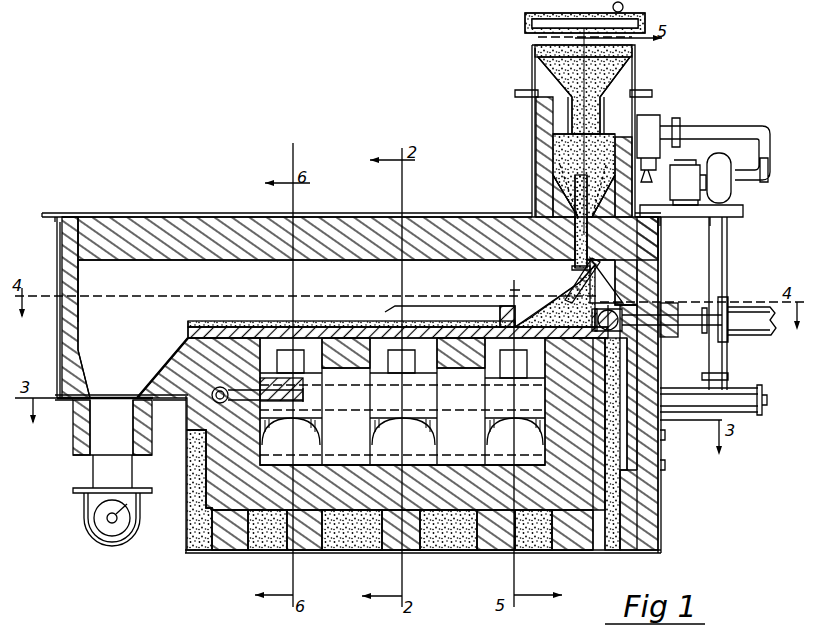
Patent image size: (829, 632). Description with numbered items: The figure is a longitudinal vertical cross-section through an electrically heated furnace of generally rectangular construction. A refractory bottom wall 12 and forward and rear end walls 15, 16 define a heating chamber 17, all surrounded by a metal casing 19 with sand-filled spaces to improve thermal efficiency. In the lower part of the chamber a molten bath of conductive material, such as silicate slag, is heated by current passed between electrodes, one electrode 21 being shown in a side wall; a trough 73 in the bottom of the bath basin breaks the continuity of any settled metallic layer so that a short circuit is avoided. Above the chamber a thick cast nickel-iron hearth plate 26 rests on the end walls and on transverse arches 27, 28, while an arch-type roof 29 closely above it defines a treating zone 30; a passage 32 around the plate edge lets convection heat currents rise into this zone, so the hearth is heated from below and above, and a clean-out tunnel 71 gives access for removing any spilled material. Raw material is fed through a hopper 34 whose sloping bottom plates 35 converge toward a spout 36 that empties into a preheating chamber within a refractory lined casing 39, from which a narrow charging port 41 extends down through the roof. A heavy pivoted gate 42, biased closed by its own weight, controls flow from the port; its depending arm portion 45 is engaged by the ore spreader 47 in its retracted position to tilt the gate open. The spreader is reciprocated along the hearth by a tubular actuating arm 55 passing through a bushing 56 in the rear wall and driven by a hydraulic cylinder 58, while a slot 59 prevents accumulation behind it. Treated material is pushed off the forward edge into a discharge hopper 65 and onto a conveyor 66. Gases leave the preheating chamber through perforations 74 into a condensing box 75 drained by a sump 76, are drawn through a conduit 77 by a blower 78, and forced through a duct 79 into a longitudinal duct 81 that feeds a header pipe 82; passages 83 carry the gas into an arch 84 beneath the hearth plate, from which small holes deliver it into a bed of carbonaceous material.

The bottom wall 12 is at (362, 505).
The end wall 15 is at (62, 266).
The end wall 16 is at (572, 470).
The heating chamber 17 is at (466, 446).
The metal casing 19 is at (120, 214).
The electrode 21 is at (375, 440).
The hearth plate 26 is at (368, 322).
The arch 27 is at (353, 369).
The arch 28 is at (466, 374).
The roof 29 is at (350, 228).
The treating zone 30 is at (370, 290).
The passage 32 is at (582, 191).
The hopper 34 is at (633, 51).
The bottom plate 35 is at (633, 72).
The spout 36 is at (534, 125).
The refractory lined casing 39 is at (540, 198).
The charging port 41 is at (568, 262).
The pivoted gate 42 is at (601, 276).
The depending arm portion 45 is at (609, 291).
The ore spreader 47 is at (462, 307).
The tubular actuating arm 55 is at (672, 330).
The bushing 56 is at (668, 303).
The hydraulic cylinder 58 is at (752, 308).
The slot 59 is at (655, 368).
The discharge hopper 65 is at (138, 378).
The conveyor 66 is at (108, 536).
The clean-out tunnel 71 is at (412, 358).
The trough 73 is at (340, 466).
The perforations 74 is at (652, 117).
The box 75 is at (662, 126).
The sump 76 is at (650, 170).
The conduit 77 is at (724, 131).
The blower 78 is at (731, 194).
The duct 79 is at (728, 258).
The duct 81 is at (741, 388).
The header pipe 82 is at (214, 402).
The passage 83 is at (306, 396).
The arch 84 is at (297, 403).